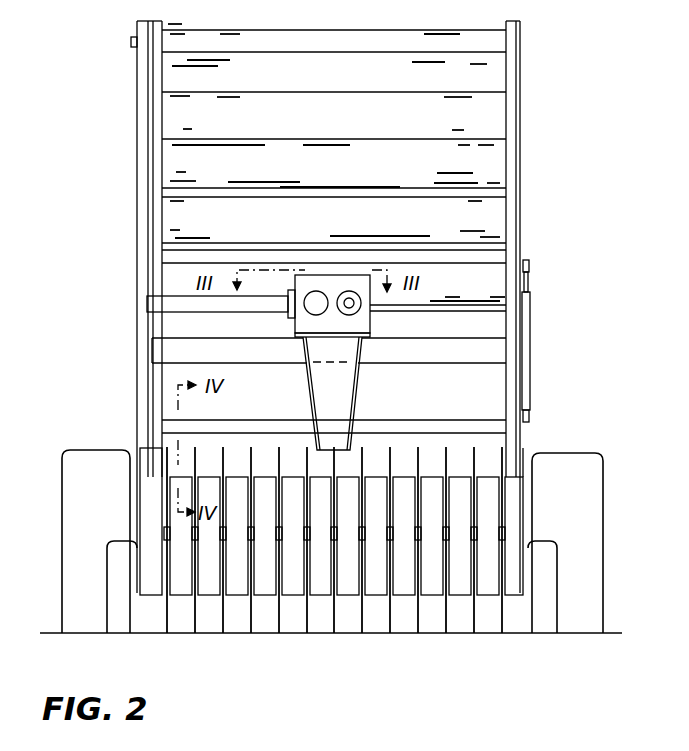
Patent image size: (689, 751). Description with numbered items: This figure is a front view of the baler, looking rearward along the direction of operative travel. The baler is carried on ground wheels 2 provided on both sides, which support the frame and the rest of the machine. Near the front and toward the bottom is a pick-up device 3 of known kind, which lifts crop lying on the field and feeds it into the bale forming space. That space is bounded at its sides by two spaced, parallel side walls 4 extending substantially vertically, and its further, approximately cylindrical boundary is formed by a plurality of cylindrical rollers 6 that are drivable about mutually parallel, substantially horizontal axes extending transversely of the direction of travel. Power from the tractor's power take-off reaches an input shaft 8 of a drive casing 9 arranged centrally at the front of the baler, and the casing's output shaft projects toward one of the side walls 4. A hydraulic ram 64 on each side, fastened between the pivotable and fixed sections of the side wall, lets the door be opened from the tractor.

The ground wheels 2 is at (62, 503).
The pick-up device 3 is at (383, 578).
The side walls 4 is at (148, 120).
The cylindrical rollers 6 is at (503, 212).
The input shaft 8 is at (351, 305).
The drive casing 9 is at (310, 276).
The hydraulic rams 64 is at (532, 326).